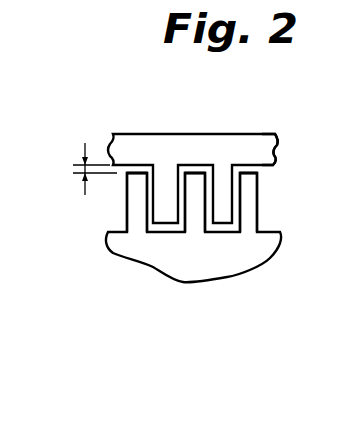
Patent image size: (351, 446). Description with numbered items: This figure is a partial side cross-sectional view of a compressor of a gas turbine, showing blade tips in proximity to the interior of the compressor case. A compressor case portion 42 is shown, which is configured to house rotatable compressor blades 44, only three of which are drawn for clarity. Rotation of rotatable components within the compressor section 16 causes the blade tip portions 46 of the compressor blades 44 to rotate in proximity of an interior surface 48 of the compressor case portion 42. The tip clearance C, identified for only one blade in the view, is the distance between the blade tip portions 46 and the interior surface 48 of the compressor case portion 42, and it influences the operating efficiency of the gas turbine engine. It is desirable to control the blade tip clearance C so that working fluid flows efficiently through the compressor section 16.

The compressor case portion 42 is at (202, 120).
The interior surface 48 is at (262, 168).
The compressor section 16 is at (258, 253).
The rotatable compressor blades 44 is at (138, 213).
The blade tip portions 46 is at (136, 179).
The tip clearance C is at (84, 169).